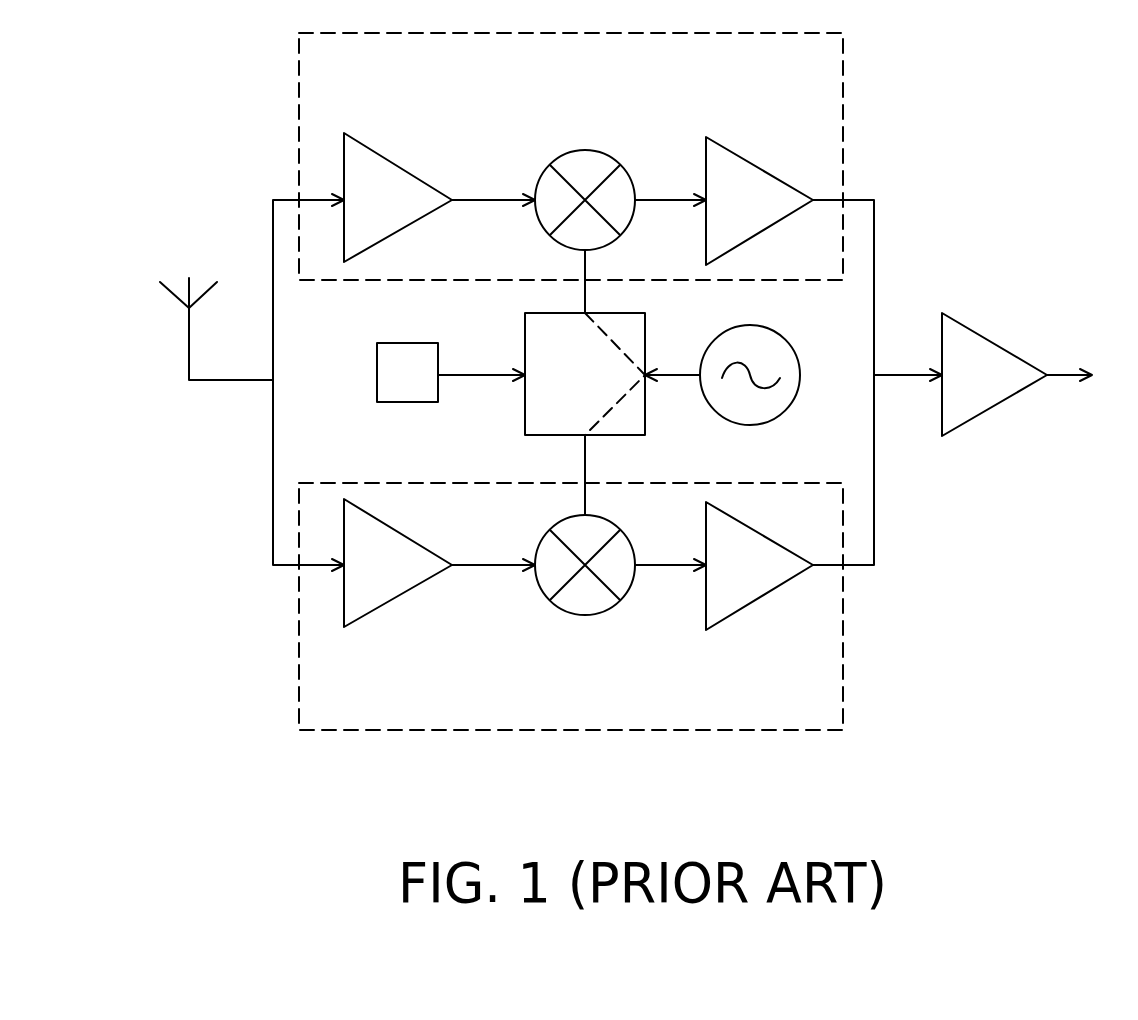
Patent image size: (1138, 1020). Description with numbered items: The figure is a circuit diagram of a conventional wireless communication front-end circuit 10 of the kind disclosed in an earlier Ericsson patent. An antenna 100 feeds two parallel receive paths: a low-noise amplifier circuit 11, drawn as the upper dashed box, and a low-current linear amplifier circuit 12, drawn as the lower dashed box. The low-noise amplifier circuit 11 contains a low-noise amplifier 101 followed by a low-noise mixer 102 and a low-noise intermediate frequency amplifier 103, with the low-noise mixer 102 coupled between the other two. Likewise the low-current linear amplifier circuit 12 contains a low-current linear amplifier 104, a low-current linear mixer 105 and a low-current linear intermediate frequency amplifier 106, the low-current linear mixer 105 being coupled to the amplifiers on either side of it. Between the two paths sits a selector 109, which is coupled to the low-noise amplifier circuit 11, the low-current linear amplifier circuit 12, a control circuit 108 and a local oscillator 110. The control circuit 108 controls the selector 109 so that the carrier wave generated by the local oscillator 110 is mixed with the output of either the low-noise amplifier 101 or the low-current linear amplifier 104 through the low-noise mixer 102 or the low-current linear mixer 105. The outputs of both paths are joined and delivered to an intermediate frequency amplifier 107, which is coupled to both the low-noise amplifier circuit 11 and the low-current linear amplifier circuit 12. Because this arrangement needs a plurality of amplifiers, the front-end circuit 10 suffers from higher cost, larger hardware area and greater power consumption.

The wireless communication front-end circuit 10 is at (1065, 823).
The low-noise amplifier circuit 11 is at (843, 87).
The low-current linear amplifier circuit 12 is at (843, 660).
The antenna 100 is at (202, 278).
The low-noise amplifier 101 is at (397, 163).
The low-noise mixer 102 is at (585, 150).
The low-noise intermediate frequency amplifier 103 is at (758, 165).
The low-current linear amplifier 104 is at (398, 595).
The low-current linear mixer 105 is at (585, 615).
The low-current linear intermediate frequency amplifier 106 is at (760, 598).
The intermediate frequency amplifier 107 is at (995, 340).
The control circuit 108 is at (392, 402).
The selector 109 is at (645, 410).
The local oscillator 110 is at (748, 325).